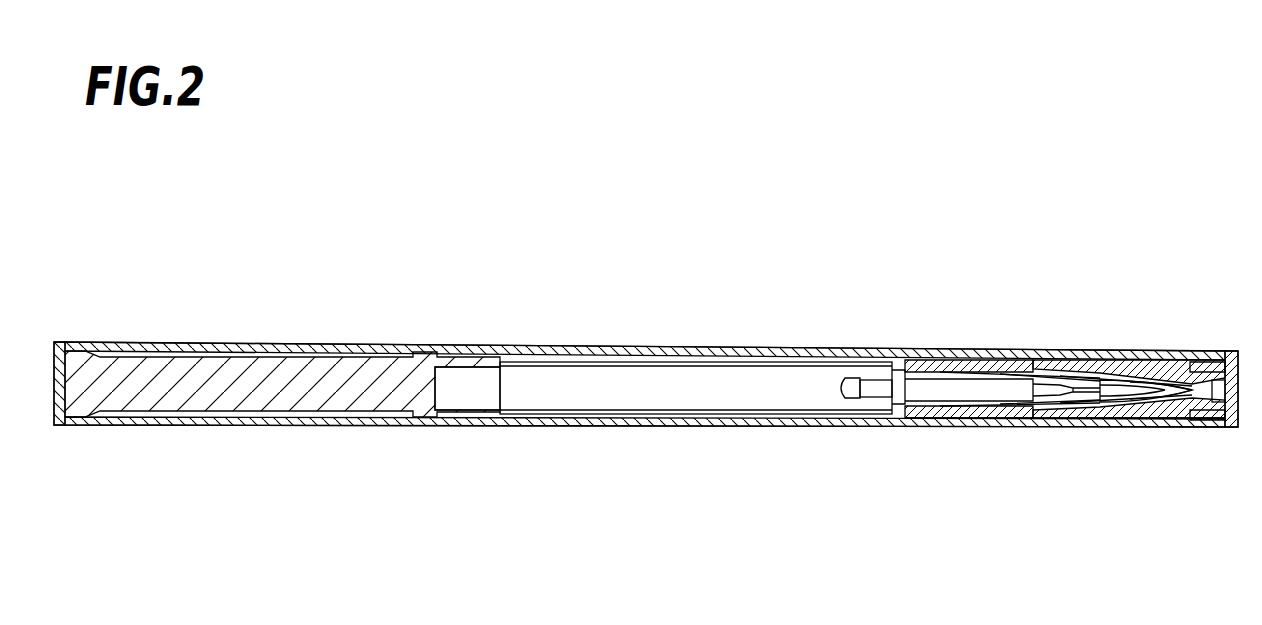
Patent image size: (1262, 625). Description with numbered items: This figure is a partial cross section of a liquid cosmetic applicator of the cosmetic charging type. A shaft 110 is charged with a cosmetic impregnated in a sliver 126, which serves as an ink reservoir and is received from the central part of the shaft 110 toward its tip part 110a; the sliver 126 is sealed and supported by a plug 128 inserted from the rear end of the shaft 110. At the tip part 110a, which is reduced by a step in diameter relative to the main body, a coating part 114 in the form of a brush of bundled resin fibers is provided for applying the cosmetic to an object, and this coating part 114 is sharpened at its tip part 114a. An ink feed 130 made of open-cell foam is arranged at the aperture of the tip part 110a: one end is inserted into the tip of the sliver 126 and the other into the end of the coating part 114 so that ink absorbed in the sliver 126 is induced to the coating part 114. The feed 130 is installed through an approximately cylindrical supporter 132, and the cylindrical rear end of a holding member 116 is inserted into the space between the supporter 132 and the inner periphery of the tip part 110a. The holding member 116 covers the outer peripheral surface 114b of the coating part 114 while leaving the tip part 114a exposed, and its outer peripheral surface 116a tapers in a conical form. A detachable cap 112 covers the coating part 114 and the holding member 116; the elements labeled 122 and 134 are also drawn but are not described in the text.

The shaft 110 is at (188, 342).
The tip part of the shaft 110a is at (927, 425).
The cap 112 is at (1013, 427).
The coating part 114 is at (1082, 370).
The tip part of the coating part 114a is at (1160, 388).
The outer peripheral surface of the coating part 114b is at (1132, 370).
The holding member 116 is at (1008, 365).
The outer peripheral surface of the holding member 116a is at (1040, 365).
The sleeve 122 is at (1083, 413).
The sliver 126 is at (530, 377).
The plug 128 is at (120, 395).
The ink feed 130 is at (915, 378).
The supporter 132 is at (940, 362).
The front cap 134 is at (1233, 357).